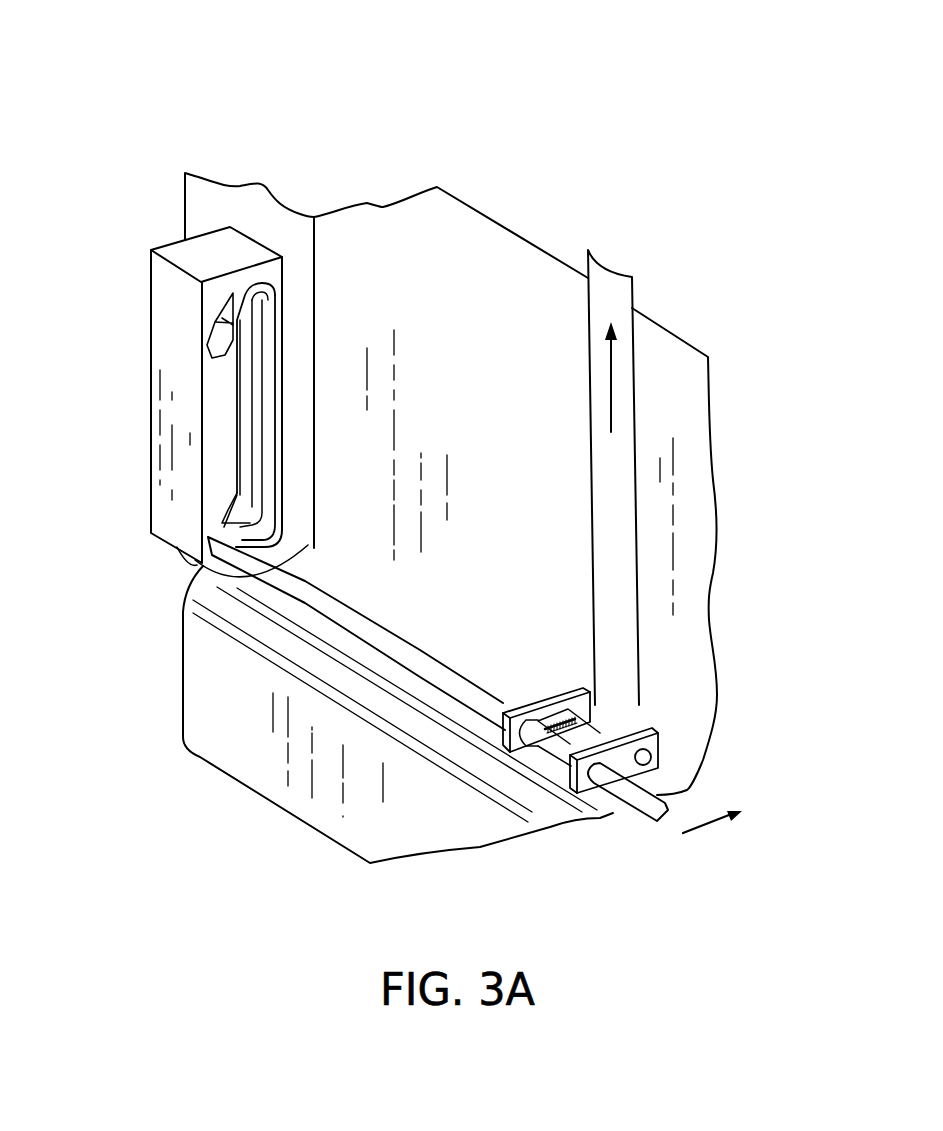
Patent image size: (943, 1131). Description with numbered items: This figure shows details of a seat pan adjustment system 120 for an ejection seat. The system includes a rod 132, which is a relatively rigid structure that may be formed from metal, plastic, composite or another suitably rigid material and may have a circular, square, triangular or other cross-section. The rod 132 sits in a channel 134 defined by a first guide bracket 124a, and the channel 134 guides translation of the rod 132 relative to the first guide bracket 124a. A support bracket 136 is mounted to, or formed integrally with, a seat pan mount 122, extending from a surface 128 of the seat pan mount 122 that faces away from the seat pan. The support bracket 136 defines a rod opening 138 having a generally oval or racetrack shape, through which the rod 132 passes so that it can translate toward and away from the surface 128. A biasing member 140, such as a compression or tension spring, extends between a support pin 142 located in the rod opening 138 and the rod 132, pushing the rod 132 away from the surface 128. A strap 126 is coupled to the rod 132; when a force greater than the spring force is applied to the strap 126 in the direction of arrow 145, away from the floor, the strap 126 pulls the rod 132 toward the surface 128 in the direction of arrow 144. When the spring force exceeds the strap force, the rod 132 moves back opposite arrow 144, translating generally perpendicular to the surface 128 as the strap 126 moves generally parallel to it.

The seat pan adjustment system 120 is at (301, 110).
The seat pan mount 122 is at (688, 637).
The first guide bracket 124a is at (175, 355).
The strap 126 is at (607, 273).
The surface 128 is at (501, 397).
The rod 132 is at (430, 666).
The channel 134 is at (237, 284).
The support bracket 136 is at (573, 698).
The rod opening 138 is at (615, 777).
The biasing member 140 is at (548, 722).
The support pin 142 is at (651, 757).
The arrow 144 is at (665, 808).
The arrow 145 is at (616, 394).